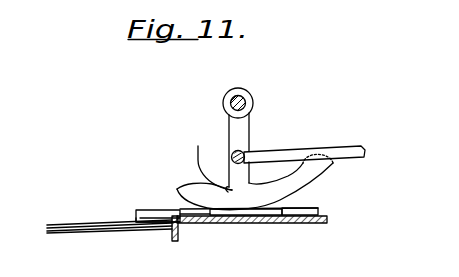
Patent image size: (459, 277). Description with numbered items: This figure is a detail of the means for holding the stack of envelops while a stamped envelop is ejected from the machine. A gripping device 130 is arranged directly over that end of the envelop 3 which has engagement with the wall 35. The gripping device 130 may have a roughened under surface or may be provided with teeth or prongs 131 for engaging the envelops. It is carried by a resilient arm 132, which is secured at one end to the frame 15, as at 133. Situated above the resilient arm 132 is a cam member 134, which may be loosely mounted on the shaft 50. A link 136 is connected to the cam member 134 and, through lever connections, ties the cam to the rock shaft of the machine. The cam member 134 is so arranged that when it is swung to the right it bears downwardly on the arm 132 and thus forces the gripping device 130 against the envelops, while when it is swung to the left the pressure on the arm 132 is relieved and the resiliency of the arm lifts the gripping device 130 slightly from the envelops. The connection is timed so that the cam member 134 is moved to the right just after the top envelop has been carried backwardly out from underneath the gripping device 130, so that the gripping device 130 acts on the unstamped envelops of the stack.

The envelop 3 is at (73, 225).
The frame 15 is at (294, 228).
The wall 35 is at (178, 238).
The shaft 50 is at (250, 101).
The gripping device 130 is at (147, 211).
The teeth or prongs 131 is at (134, 218).
The resilient arm 132 is at (227, 224).
The securing point 133 is at (303, 208).
The cam member 134 is at (198, 150).
The link 136 is at (363, 128).